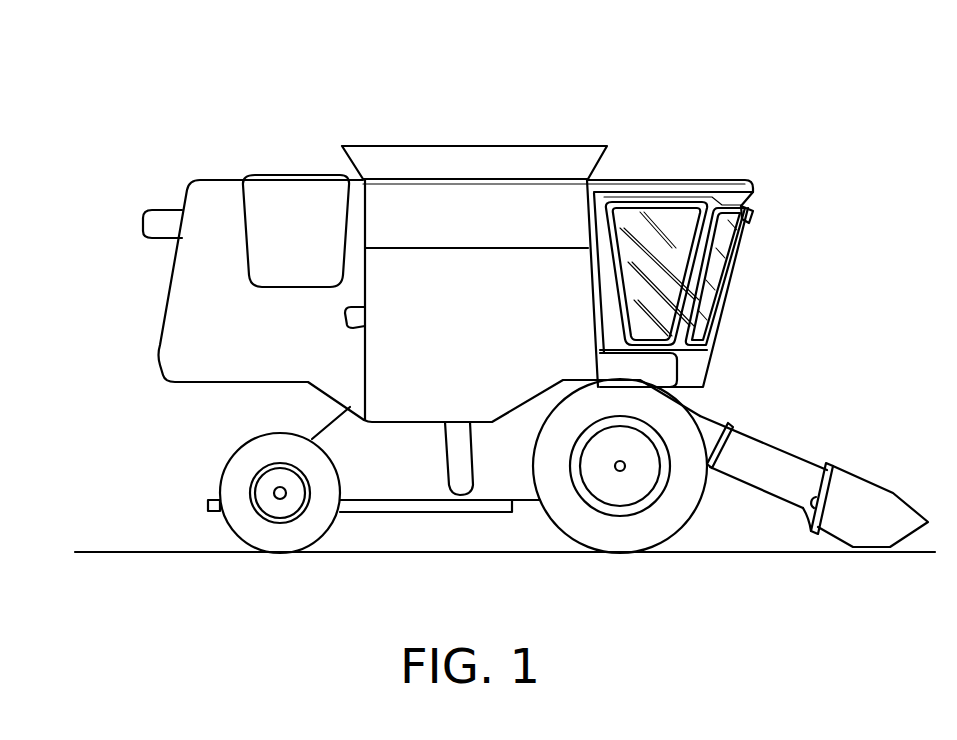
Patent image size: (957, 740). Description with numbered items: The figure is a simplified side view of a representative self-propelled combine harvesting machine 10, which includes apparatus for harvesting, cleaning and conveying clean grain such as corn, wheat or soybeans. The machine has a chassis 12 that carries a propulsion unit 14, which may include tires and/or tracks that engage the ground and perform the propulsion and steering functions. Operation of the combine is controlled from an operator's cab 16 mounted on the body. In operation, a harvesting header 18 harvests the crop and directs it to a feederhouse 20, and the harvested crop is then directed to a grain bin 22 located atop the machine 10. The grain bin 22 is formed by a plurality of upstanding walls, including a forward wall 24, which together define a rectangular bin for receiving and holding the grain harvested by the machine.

The self-propelled combine harvesting machine 10 is at (696, 75).
The chassis 12 is at (327, 423).
The propulsion unit 14 is at (313, 533).
The operator's cab 16 is at (770, 223).
The harvesting header 18 is at (882, 490).
The feederhouse 20 is at (775, 442).
The grain bin 22 is at (473, 146).
The forward wall 24 is at (828, 465).